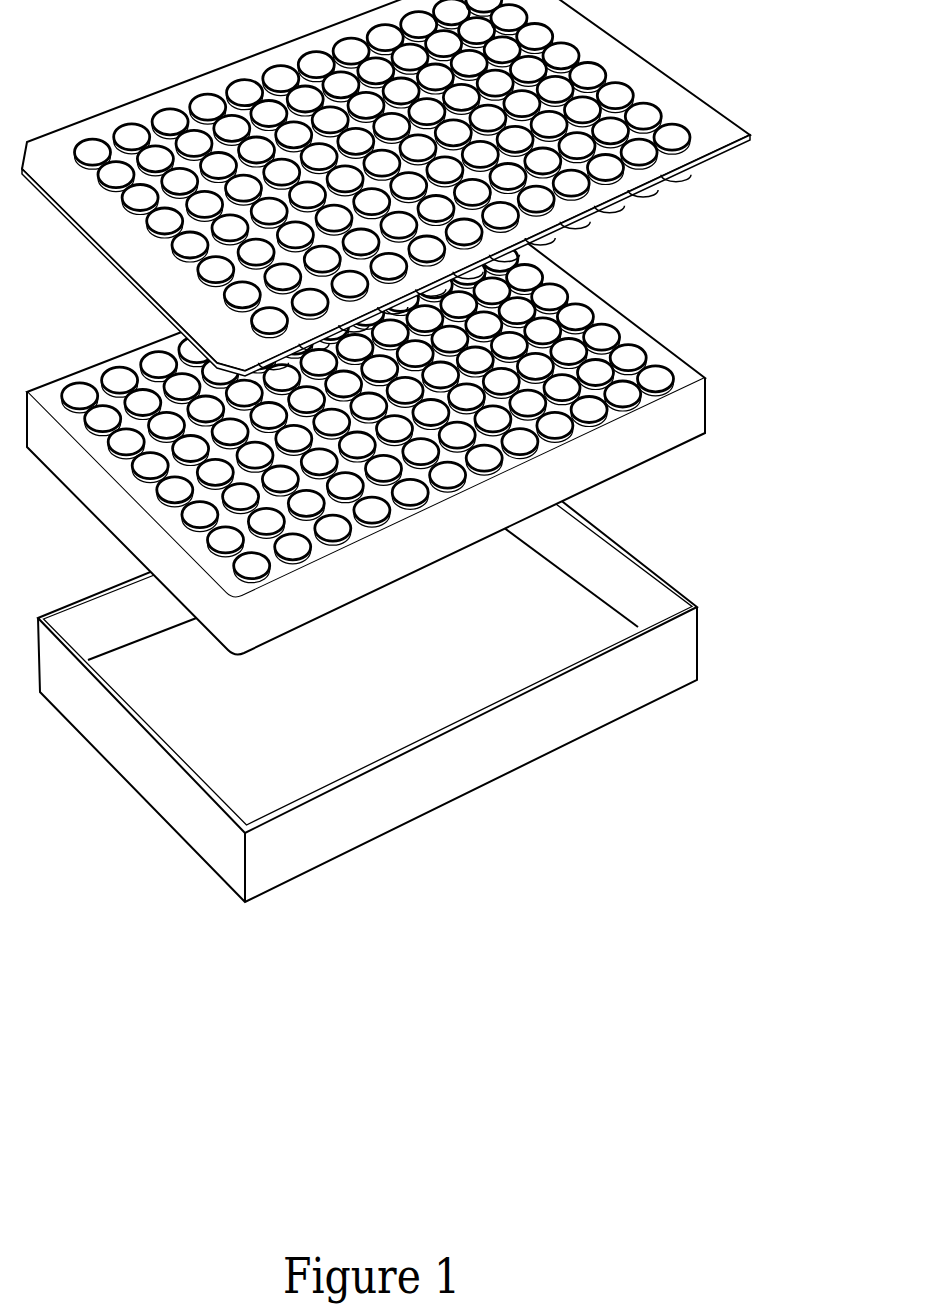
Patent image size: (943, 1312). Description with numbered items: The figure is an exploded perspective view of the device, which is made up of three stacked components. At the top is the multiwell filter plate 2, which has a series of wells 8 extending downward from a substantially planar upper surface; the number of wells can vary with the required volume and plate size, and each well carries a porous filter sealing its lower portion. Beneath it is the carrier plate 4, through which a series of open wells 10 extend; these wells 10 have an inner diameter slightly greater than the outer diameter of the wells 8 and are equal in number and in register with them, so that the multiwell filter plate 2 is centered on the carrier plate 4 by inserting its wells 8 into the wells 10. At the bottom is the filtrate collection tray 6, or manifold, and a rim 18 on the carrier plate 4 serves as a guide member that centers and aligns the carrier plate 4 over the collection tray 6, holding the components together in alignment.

The multiwell filter plate 2 is at (697, 105).
The wells 8 is at (673, 137).
The carrier plate 4 is at (683, 375).
The open wells 10 is at (655, 379).
The rim 18 is at (625, 438).
The filtrate collection tray 6 is at (658, 672).